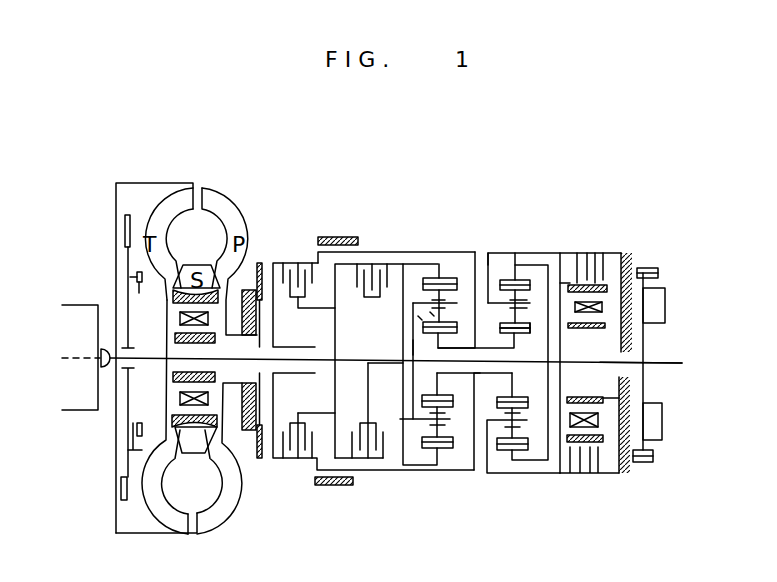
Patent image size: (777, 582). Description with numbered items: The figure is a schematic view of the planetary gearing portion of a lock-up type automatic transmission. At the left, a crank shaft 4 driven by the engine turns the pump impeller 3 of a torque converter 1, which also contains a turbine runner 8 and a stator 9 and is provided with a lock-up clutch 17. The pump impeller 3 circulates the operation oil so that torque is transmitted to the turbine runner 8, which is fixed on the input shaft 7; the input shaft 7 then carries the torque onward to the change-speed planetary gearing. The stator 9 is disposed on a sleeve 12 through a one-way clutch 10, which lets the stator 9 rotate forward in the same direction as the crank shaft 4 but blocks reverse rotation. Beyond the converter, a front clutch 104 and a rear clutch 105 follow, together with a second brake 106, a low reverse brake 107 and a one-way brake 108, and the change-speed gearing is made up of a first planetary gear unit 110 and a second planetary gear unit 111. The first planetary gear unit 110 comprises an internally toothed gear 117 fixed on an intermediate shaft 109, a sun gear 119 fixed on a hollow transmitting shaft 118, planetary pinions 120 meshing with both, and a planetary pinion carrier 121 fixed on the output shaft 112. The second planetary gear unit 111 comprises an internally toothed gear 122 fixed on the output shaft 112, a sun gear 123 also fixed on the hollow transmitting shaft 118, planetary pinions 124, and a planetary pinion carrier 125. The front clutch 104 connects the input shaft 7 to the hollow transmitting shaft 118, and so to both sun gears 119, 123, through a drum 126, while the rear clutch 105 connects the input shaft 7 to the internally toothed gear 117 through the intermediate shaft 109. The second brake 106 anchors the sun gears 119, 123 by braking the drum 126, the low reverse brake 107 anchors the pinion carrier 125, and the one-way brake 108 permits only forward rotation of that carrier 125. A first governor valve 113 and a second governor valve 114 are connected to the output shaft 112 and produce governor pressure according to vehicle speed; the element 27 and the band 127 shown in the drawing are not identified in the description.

The torque converter 1 is at (237, 212).
The pump impeller 3 is at (238, 223).
The crank shaft 4 is at (85, 357).
The input shaft 7 is at (146, 361).
The turbine runner 8 is at (175, 203).
The stator 9 is at (203, 270).
The one-way clutch 10 is at (180, 318).
The sleeve 12 is at (250, 346).
The lock-up clutch 17 is at (122, 247).
The damper 27 is at (121, 277).
The front clutch 104 is at (303, 263).
The rear clutch 105 is at (387, 264).
The second brake 106 is at (345, 236).
The low reverse brake 107 is at (577, 253).
The one-way brake 108 is at (602, 307).
The intermediate shaft 109 is at (375, 365).
The first planetary gear unit 110 is at (455, 268).
The second planetary gear unit 111 is at (508, 275).
The output shaft 112 is at (662, 363).
The first governor valve 113 is at (662, 410).
The second governor valve 114 is at (665, 307).
The internally toothed gear 117 is at (435, 262).
The hollow transmitting shaft 118 is at (479, 372).
The sun gear 119 is at (432, 314).
The planetary pinions 120 is at (420, 318).
The planetary pinion carrier 121 is at (413, 347).
The internally toothed gear 122 is at (530, 266).
The sun gear 123 is at (520, 330).
The planetary pinions 124 is at (522, 328).
The planetary pinion carrier 125 is at (485, 262).
The drum 126 is at (385, 252).
The second brake 127 is at (260, 460).